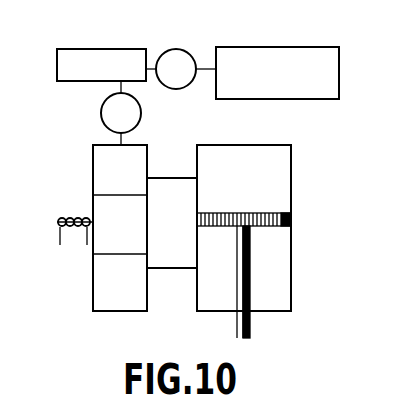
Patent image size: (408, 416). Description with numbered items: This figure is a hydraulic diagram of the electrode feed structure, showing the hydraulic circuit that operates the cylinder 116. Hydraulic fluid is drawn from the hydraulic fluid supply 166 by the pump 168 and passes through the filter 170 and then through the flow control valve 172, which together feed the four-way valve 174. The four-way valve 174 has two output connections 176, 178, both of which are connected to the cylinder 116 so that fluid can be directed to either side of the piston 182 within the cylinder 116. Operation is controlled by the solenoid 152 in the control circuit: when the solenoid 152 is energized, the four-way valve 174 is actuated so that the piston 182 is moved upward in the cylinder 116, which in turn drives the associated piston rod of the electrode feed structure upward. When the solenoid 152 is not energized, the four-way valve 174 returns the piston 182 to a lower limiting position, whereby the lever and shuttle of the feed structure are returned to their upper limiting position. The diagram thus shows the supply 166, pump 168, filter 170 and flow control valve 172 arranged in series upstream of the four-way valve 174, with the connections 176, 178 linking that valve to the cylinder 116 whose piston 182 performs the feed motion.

The cylinder 116 is at (292, 261).
The solenoid 152 is at (72, 214).
The hydraulic fluid supply 166 is at (268, 47).
The pump 168 is at (177, 49).
The filter 170 is at (113, 49).
The flow control valve 172 is at (101, 116).
The four-way valve 174 is at (93, 270).
The output connection 176 is at (163, 178).
The output connection 178 is at (178, 268).
The piston 182 is at (278, 213).